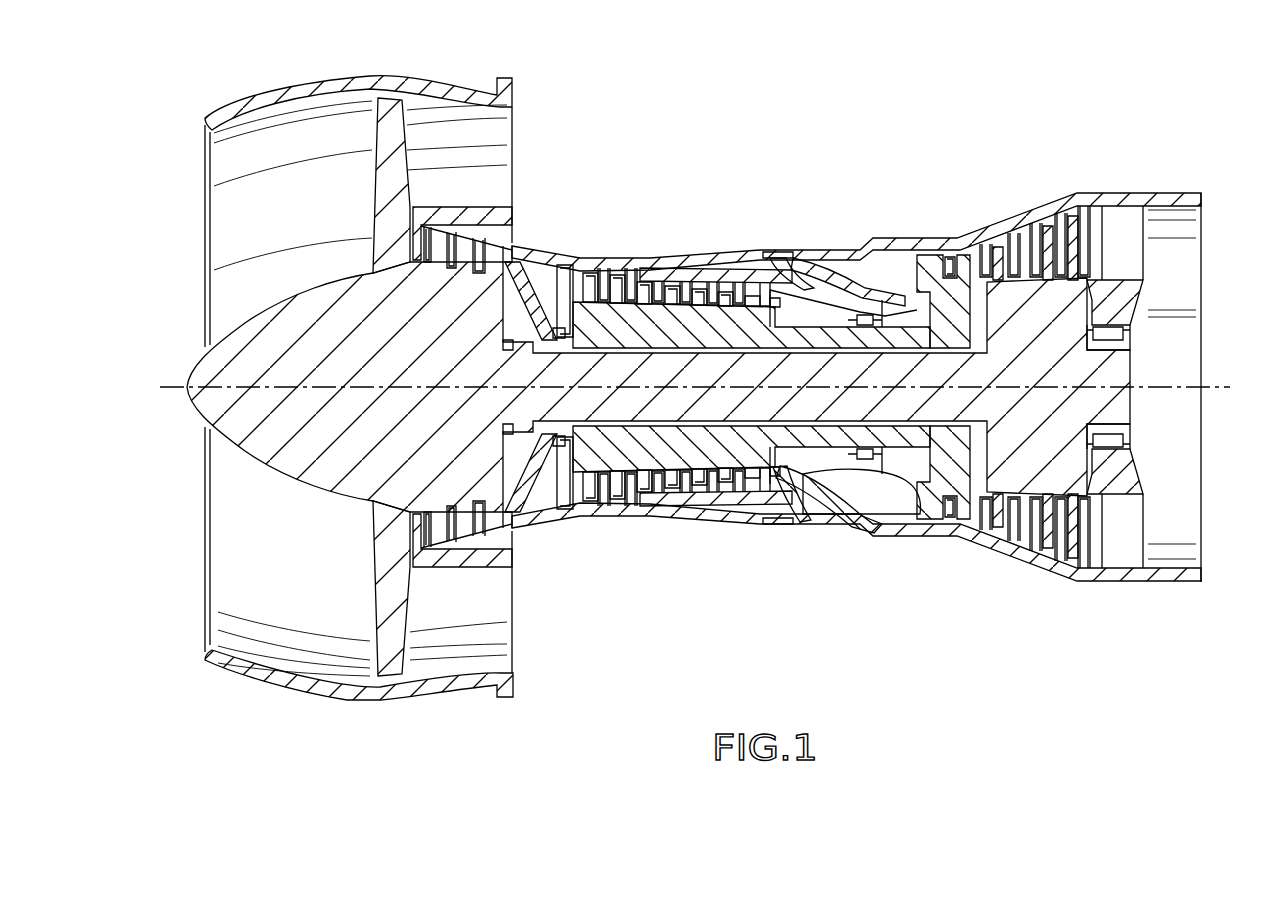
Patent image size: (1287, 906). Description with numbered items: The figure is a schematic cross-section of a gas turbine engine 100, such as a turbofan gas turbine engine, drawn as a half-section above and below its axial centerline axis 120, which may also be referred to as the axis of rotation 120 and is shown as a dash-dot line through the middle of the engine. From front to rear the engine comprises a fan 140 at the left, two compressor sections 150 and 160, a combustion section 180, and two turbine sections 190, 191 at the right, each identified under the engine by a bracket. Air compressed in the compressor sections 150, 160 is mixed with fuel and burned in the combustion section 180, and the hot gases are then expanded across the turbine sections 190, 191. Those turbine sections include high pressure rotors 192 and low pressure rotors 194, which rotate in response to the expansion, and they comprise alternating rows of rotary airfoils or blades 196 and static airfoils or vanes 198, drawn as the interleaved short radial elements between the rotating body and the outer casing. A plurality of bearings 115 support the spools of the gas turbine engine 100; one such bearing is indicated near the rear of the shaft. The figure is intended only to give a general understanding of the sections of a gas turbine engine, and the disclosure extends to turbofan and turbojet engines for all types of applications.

The gas turbine engine 100 is at (938, 128).
The bearings 115 is at (1125, 332).
The axial centerline axis 120 is at (160, 385).
The fan 140 is at (425, 122).
The compressor section 150 is at (420, 710).
The compressor section 160 is at (588, 532).
The combustion section 180 is at (920, 550).
The turbine section 190 is at (920, 597).
The turbine section 191 is at (990, 597).
The high pressure rotors 192 is at (960, 268).
The low pressure rotors 194 is at (1090, 298).
The rotary airfoils or blades 196 is at (1020, 245).
The static airfoils or vanes 198 is at (1040, 232).